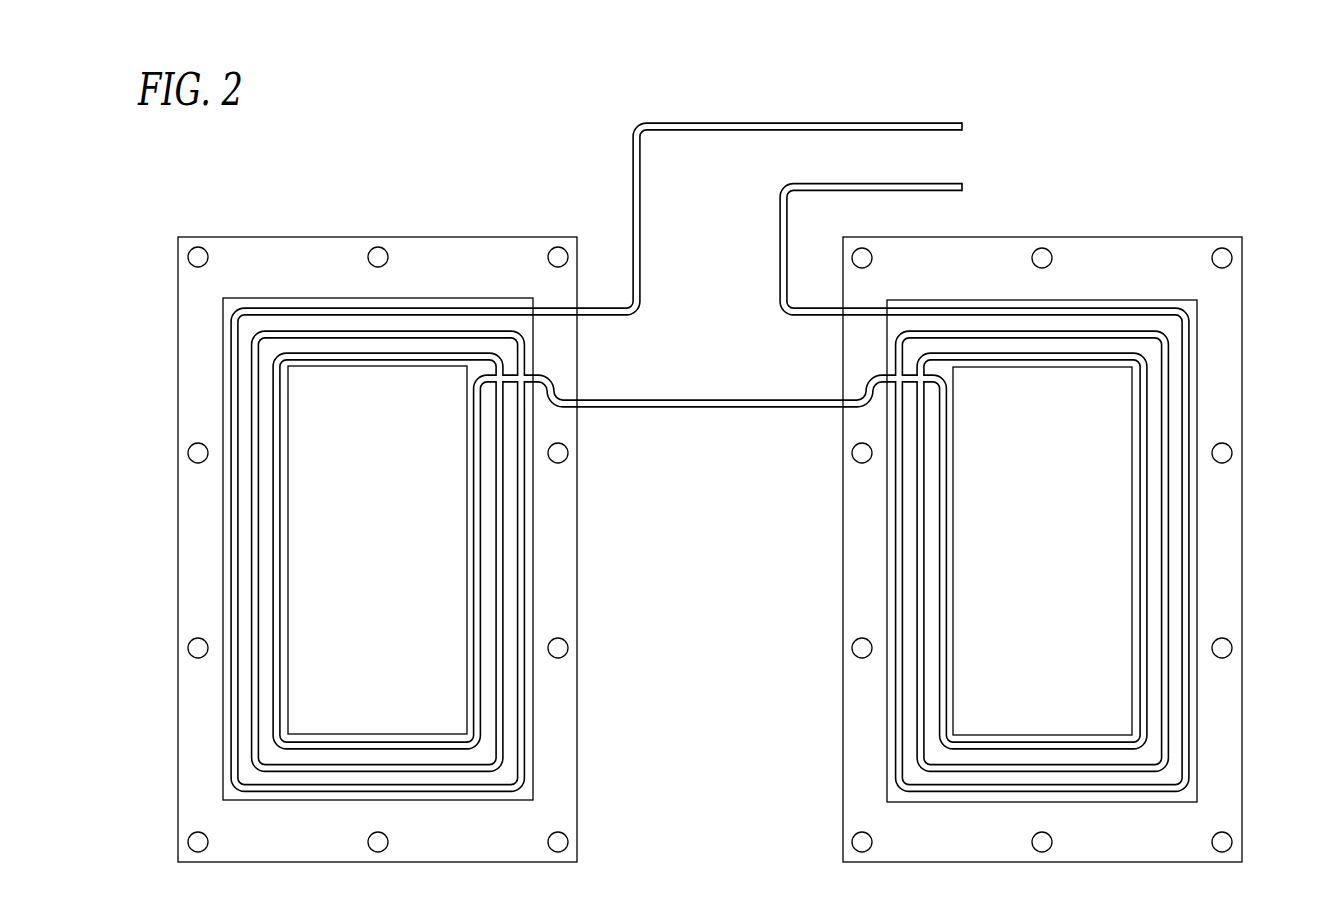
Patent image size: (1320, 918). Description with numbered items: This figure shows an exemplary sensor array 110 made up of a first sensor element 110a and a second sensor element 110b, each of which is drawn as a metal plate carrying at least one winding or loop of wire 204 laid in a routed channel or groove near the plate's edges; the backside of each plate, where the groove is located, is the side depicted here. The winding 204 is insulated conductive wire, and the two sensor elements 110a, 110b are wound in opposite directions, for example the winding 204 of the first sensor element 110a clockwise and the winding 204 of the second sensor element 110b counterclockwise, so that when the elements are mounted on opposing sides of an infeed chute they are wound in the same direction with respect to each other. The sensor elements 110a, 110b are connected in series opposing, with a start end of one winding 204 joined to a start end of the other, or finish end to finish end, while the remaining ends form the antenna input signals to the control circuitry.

The sensor array 110 is at (1073, 132).
The first sensor element 110a is at (462, 237).
The second sensor element 110b is at (1125, 240).
The winding 204 is at (497, 578).